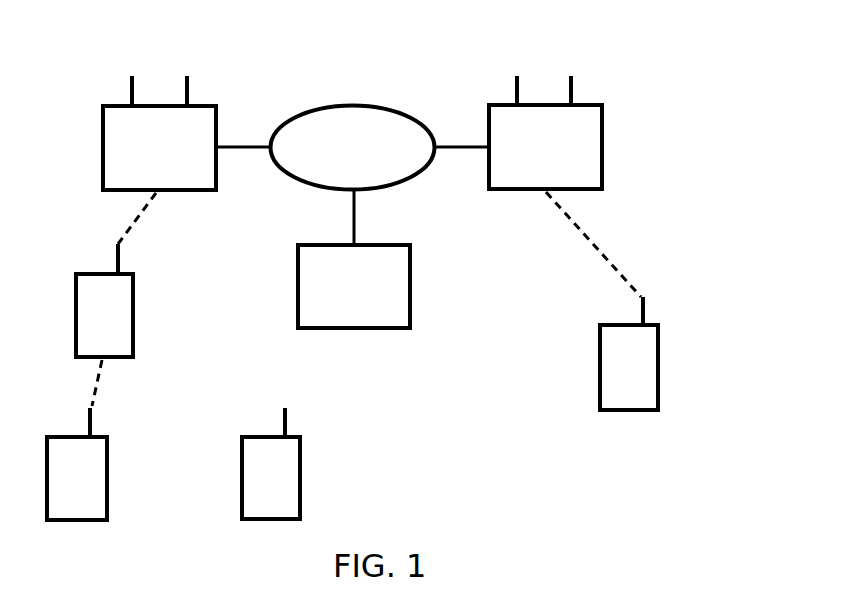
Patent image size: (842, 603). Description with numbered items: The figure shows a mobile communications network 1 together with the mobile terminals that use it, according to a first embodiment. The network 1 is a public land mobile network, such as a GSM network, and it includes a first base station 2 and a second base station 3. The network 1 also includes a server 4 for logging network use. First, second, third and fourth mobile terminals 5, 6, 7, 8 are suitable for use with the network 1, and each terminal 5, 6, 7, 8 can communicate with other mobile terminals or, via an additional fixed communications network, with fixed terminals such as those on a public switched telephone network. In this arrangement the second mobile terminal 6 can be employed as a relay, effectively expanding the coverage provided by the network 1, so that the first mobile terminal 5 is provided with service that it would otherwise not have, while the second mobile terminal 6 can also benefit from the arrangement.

The mobile communications network 1 is at (393, 120).
The first base station 2 is at (200, 120).
The second base station 3 is at (585, 120).
The server 4 is at (393, 258).
The first mobile terminal 5 is at (90, 450).
The second mobile terminal 6 is at (117, 286).
The third mobile terminal 7 is at (640, 338).
The fourth mobile terminal 8 is at (283, 450).